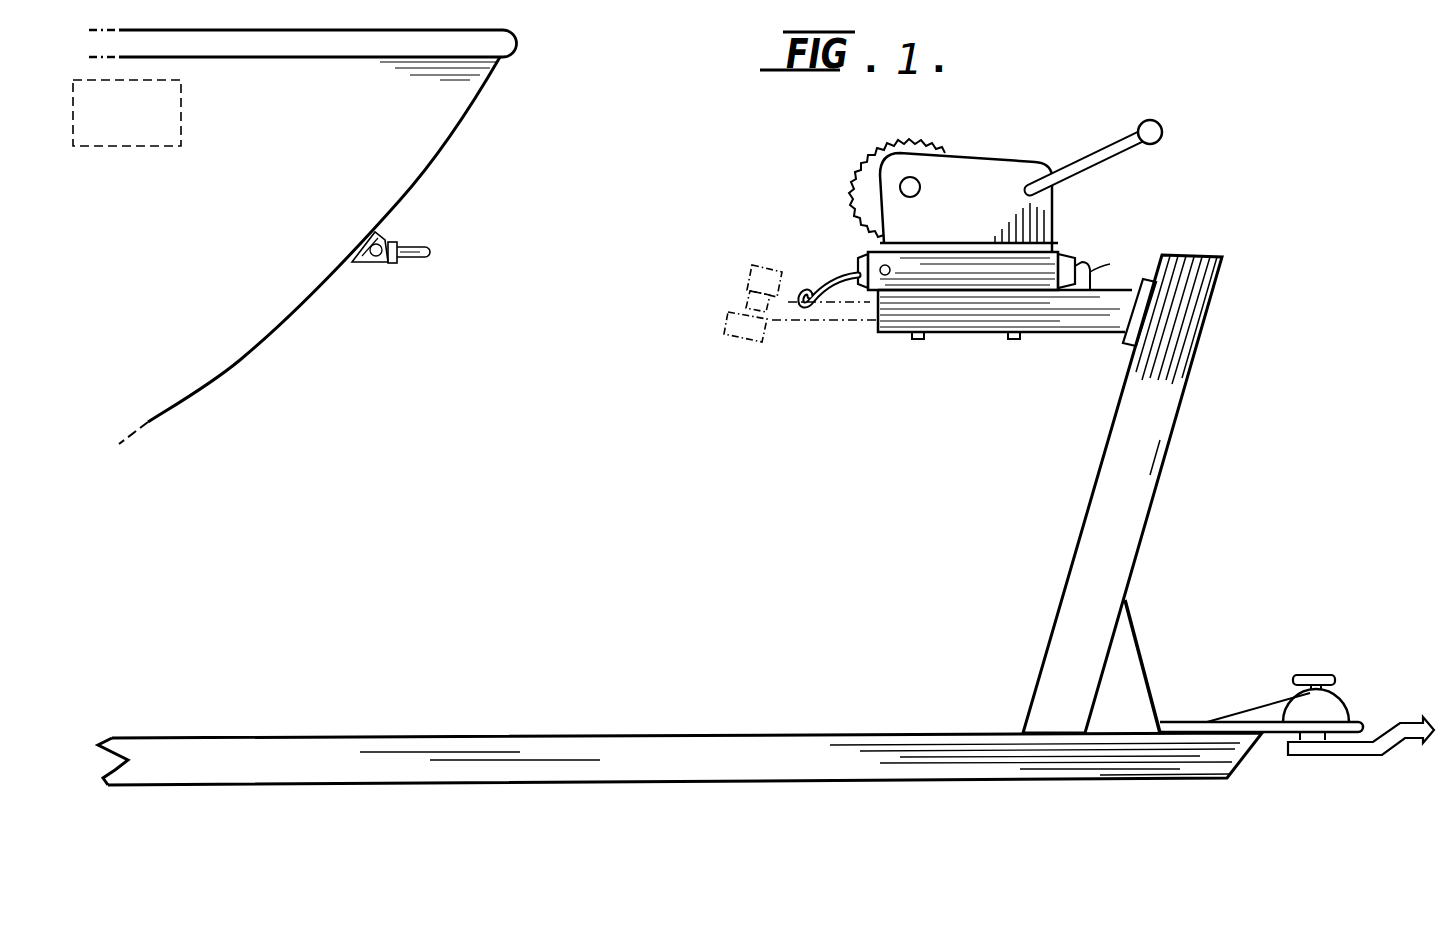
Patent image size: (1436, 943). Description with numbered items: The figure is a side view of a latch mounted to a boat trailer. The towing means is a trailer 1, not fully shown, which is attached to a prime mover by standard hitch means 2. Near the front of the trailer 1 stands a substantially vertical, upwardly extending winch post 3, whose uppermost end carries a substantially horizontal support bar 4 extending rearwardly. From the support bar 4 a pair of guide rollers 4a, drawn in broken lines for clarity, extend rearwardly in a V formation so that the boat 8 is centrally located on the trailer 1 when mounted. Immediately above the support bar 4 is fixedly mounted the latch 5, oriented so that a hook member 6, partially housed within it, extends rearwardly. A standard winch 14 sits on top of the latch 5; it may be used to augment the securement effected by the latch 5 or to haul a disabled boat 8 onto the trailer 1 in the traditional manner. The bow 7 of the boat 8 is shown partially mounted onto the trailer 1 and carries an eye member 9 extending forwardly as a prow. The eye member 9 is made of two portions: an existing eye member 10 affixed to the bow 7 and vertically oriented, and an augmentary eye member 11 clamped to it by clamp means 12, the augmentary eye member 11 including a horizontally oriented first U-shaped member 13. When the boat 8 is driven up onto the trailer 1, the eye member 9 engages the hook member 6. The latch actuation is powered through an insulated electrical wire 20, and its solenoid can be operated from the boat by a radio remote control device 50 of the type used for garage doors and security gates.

The trailer 1 is at (539, 762).
The hitch means 2 is at (1314, 670).
The winch post 3 is at (1132, 508).
The support bar 4 is at (1038, 320).
The guide rollers 4a is at (745, 289).
The latch 5 is at (920, 247).
The hook member 6 is at (848, 292).
The bow 7 is at (490, 99).
The boat 8 is at (272, 190).
The eye member 9 is at (437, 247).
The existing eye member 10 is at (357, 266).
The augmentary eye member 11 is at (417, 264).
The clamp means 12 is at (389, 268).
The first U-shaped member 13 is at (432, 248).
The winch 14 is at (977, 175).
The insulated electrical wire 20 is at (1093, 270).
The radio remote control device 50 is at (181, 129).